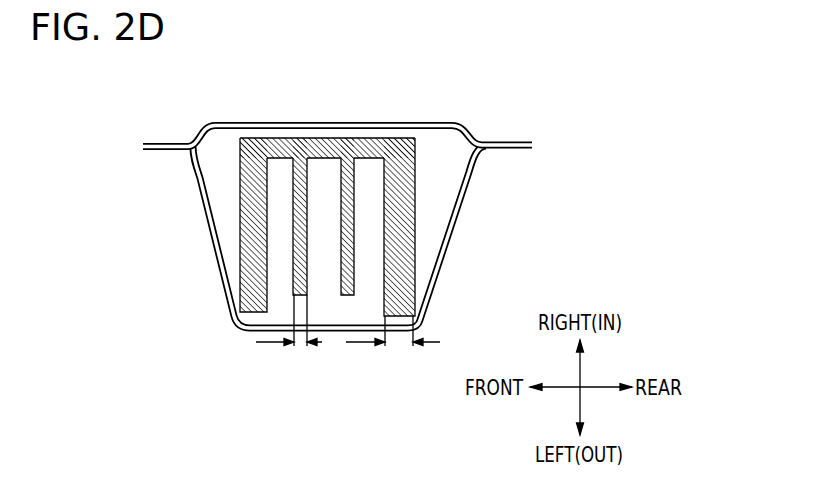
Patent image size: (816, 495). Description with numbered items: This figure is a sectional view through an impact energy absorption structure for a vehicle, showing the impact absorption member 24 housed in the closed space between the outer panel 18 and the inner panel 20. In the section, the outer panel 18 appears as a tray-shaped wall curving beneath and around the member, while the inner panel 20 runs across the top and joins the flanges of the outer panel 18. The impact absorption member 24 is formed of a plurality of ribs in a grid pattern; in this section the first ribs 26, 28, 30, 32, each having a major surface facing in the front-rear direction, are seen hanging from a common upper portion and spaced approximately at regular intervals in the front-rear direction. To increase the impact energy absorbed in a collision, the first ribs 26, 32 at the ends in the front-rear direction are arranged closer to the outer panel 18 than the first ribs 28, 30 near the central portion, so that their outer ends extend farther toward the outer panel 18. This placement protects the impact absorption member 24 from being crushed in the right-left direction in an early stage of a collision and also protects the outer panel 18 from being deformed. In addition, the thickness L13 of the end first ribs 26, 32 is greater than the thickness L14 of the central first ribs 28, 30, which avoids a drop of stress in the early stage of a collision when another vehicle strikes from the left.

The outer panel 18 is at (210, 233).
The inner panel 20 is at (207, 126).
The impact absorption member 24 is at (344, 195).
The first rib 26 is at (237, 157).
The first rib 28 is at (290, 168).
The first rib 30 is at (340, 167).
The first rib 32 is at (381, 165).
The thickness of the end first ribs L13 is at (393, 346).
The thickness of the central first ribs L14 is at (289, 336).